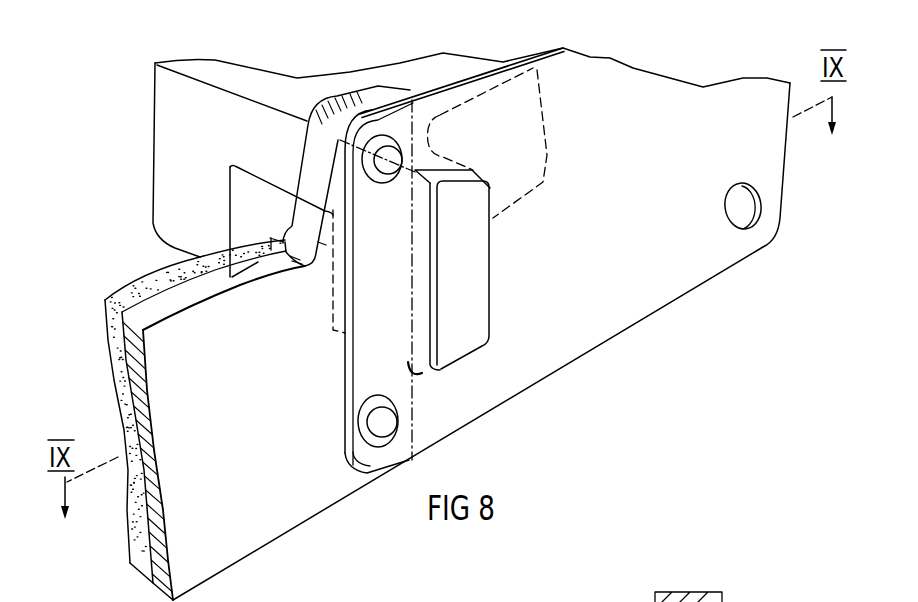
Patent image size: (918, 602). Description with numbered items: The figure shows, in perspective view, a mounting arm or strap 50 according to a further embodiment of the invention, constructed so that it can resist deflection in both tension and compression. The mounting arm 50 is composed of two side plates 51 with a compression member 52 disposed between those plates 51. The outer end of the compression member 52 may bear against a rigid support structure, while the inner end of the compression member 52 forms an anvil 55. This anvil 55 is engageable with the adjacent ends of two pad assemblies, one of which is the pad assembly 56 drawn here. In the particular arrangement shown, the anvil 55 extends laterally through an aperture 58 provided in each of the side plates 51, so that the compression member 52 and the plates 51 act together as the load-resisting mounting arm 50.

The mounting arm 50 is at (670, 324).
The side plate 51 is at (552, 348).
The compression member 52 is at (412, 80).
The anvil 55 is at (472, 255).
The pad assembly 56 is at (243, 540).
The aperture 58 is at (417, 373).